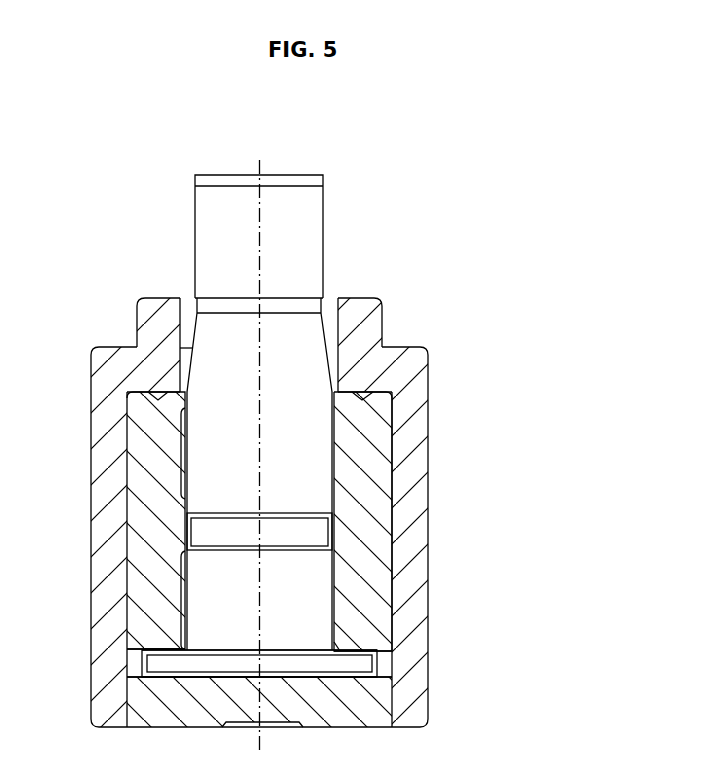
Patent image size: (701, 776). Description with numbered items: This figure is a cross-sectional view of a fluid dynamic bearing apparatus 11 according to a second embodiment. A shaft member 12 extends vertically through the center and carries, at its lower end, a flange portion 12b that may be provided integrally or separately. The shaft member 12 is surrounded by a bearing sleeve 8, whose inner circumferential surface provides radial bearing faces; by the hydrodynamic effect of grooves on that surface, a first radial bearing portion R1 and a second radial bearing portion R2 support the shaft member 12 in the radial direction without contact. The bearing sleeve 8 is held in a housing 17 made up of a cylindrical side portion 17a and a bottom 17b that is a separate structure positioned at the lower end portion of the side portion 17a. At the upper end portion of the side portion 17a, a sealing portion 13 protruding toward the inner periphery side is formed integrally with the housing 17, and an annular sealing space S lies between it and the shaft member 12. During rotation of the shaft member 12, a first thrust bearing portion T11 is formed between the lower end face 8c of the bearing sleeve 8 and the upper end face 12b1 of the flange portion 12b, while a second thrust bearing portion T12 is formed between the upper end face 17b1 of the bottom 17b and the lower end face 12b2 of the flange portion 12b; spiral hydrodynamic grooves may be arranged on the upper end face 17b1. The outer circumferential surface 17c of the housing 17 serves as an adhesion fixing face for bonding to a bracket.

The fluid dynamic bearing apparatus 11 is at (530, 293).
The shaft member 12 is at (328, 243).
The flange portion 12b is at (380, 662).
The upper end face of flange portion 12b1 is at (362, 650).
The lower end face of flange portion 12b2 is at (358, 678).
The sealing portion 13 is at (160, 352).
The bearing sleeve 8 is at (398, 422).
The lower end face of bearing sleeve 8c is at (124, 665).
The housing 17 is at (394, 733).
The side portion 17a is at (110, 525).
The bottom 17b is at (308, 712).
The upper end face of bottom 17b1 is at (204, 677).
The outer circumferential surface of housing 17c is at (430, 568).
The sealing space S is at (186, 328).
The first radial bearing portion R1 is at (164, 453).
The second radial bearing portion R2 is at (166, 592).
The first thrust bearing portion T11 is at (155, 645).
The second thrust bearing portion T12 is at (175, 684).